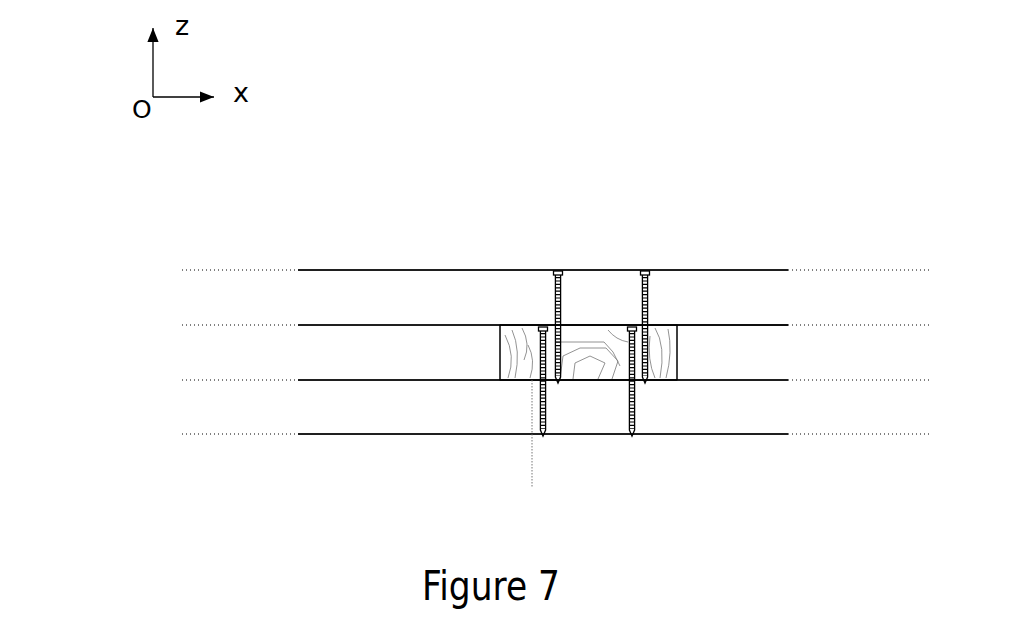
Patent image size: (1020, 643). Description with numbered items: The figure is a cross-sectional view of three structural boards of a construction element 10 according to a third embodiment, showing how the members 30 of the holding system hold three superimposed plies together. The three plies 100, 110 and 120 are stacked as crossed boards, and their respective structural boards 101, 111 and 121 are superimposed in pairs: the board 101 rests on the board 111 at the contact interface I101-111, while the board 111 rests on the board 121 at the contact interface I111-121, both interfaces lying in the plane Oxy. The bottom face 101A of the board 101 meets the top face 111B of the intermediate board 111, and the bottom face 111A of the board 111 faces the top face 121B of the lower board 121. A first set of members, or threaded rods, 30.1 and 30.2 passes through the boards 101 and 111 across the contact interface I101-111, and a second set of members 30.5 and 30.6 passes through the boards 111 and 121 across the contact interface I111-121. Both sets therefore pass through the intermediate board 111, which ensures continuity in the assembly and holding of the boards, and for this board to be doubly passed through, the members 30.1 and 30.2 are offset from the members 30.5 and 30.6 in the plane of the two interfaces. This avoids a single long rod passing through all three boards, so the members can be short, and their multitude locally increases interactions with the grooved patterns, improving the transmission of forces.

The construction element 10 is at (236, 250).
The holding system members 30 is at (535, 266).
The first member or threaded rod 30.1 is at (562, 268).
The second member or threaded rod 30.2 is at (648, 268).
The fifth member or threaded rod 30.5 is at (546, 436).
The sixth member or threaded rod 30.6 is at (634, 436).
The first ply 100 is at (190, 290).
The second ply 110 is at (190, 348).
The third ply 120 is at (190, 407).
The structural board 101 is at (384, 281).
The intermediate structural board 111 is at (512, 334).
The structural board 121 is at (408, 422).
The bottom face of structural board 101 101A is at (695, 327).
The bottom face of structural board 111 111A is at (518, 379).
The top face of structural board 111 111B is at (672, 327).
The top face of structural board 121 121B is at (545, 453).
The contact interface between boards 101 and 111 I101-111 is at (662, 324).
The contact interface between boards 111 and 121 I111-121 is at (670, 380).